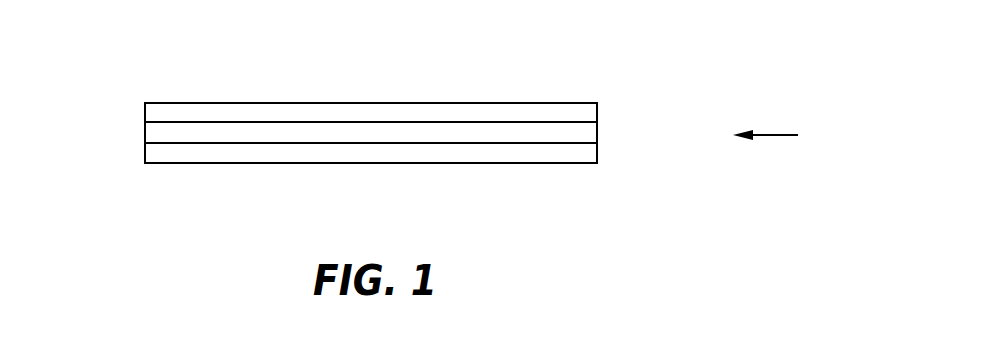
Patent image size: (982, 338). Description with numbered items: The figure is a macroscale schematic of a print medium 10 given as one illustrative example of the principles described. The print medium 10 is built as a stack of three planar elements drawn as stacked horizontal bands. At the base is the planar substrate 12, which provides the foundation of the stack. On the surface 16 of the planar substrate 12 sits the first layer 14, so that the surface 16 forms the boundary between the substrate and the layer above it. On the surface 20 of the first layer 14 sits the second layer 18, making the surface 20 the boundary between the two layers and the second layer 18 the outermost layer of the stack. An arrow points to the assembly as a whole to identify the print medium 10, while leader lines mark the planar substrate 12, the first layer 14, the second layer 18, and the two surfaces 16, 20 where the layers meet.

The print medium 10 is at (794, 139).
The planar substrate 12 is at (599, 151).
The first layer 14 is at (145, 131).
The surface 16 is at (502, 143).
The second layer 18 is at (540, 102).
The surface 20 is at (258, 122).